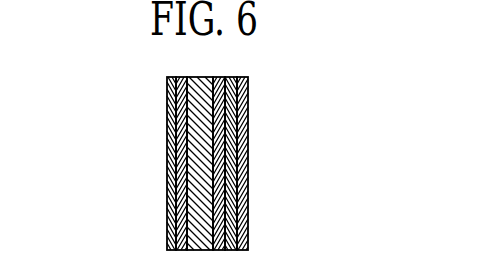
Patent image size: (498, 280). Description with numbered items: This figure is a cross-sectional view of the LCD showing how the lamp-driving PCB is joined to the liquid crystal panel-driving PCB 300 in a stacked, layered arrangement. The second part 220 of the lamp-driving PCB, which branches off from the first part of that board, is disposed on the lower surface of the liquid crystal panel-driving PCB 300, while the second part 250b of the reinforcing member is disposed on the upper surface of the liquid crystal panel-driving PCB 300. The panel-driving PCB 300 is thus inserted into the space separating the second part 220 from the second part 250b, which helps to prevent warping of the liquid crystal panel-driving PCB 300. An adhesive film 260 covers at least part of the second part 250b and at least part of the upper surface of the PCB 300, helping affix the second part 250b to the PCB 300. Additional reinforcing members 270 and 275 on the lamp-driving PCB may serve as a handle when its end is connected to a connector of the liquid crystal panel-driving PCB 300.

The adhesive film 260 is at (167, 122).
The second part of the reinforcing member 250b is at (174, 149).
The liquid crystal panel-driving PCB 300 is at (186, 189).
The additional reinforcing member 275 is at (218, 167).
The second part of the lamp-driving PCB 220 is at (237, 135).
The additional reinforcing member 270 is at (248, 105).